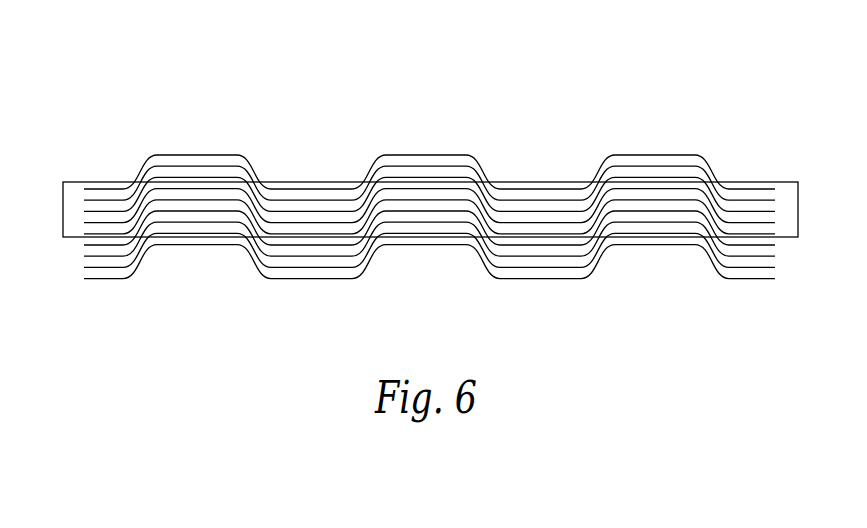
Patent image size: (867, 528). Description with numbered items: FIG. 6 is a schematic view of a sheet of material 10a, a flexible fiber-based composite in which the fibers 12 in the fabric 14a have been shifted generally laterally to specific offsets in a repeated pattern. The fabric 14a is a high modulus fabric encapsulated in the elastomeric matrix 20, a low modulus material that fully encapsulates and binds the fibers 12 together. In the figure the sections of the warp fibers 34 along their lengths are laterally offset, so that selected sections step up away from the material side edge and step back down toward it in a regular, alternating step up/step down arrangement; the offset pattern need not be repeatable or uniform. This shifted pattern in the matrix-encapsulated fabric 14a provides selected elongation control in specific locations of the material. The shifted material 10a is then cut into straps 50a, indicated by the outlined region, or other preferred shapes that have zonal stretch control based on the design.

The sheet of material 10a is at (430, 192).
The fibers 12 is at (288, 188).
The fabric 14a is at (663, 173).
The elastomeric matrix 20 is at (418, 172).
The warp fibers 34 is at (650, 248).
The strap 50a is at (742, 228).